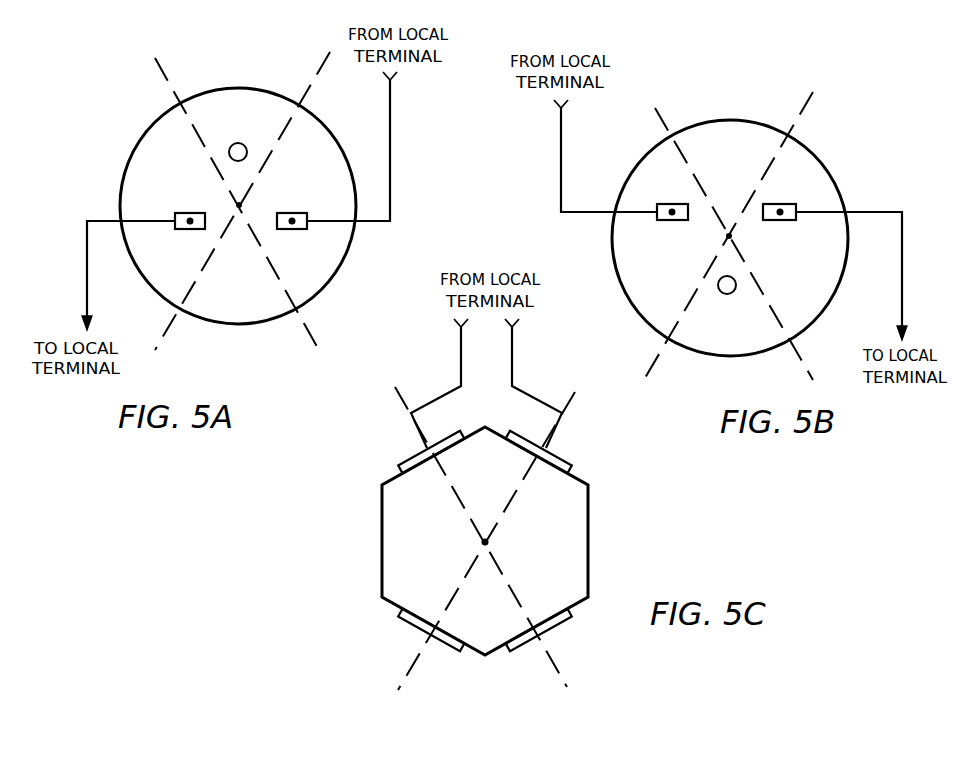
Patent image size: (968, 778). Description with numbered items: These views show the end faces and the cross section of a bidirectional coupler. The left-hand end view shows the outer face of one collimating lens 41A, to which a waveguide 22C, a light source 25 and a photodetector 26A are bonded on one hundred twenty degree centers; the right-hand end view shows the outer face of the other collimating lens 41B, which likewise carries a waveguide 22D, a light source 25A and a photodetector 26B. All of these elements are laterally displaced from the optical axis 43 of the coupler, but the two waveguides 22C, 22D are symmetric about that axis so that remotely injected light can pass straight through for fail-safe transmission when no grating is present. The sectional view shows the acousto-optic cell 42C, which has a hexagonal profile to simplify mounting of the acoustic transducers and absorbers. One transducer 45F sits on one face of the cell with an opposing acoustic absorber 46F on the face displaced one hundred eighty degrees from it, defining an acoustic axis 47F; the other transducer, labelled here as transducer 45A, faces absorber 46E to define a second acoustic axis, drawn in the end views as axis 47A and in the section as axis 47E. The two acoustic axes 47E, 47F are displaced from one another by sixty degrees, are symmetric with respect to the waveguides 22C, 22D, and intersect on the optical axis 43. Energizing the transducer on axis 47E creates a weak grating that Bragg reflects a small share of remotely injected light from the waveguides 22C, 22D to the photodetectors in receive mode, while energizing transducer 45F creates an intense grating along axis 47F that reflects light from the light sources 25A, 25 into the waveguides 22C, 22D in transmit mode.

In FIG. 5A, the collimating lens 41A is at (247, 95).
In FIG. 5B, the collimating lens 41B is at (738, 128).
In FIG. 5C, the acousto-optic cell 42C is at (580, 568).
In FIG. 5A, the optical axis 43 is at (234, 202).
In FIG. 5B, the optical axis 43 is at (725, 238).
In FIG. 5C, the optical axis 43 is at (485, 542).
In FIG. 5A, the waveguide 22C is at (234, 143).
In FIG. 5B, the waveguide 22D is at (727, 294).
In FIG. 5A, the light source 25 is at (294, 213).
In FIG. 5B, the light source 25A is at (680, 204).
In FIG. 5A, the photodetector 26A is at (158, 261).
In FIG. 5B, the photodetector 26B is at (793, 204).
In FIG. 5C, the input contact pad 45A is at (568, 461).
In FIG. 5C, the acoustic transducer 45F is at (408, 462).
In FIG. 5C, the acoustic absorber 46E is at (412, 628).
In FIG. 5C, the acoustic absorber 46F is at (563, 627).
In FIG. 5B, the radial axis line 47A is at (662, 116).
In FIG. 5A, the acoustic axis 47E is at (316, 73).
In FIG. 5C, the acoustic axis 47E is at (458, 588).
In FIG. 5A, the acoustic axis 47F is at (313, 341).
In FIG. 5B, the acoustic axis 47F is at (806, 111).
In FIG. 5C, the acoustic axis 47F is at (518, 596).